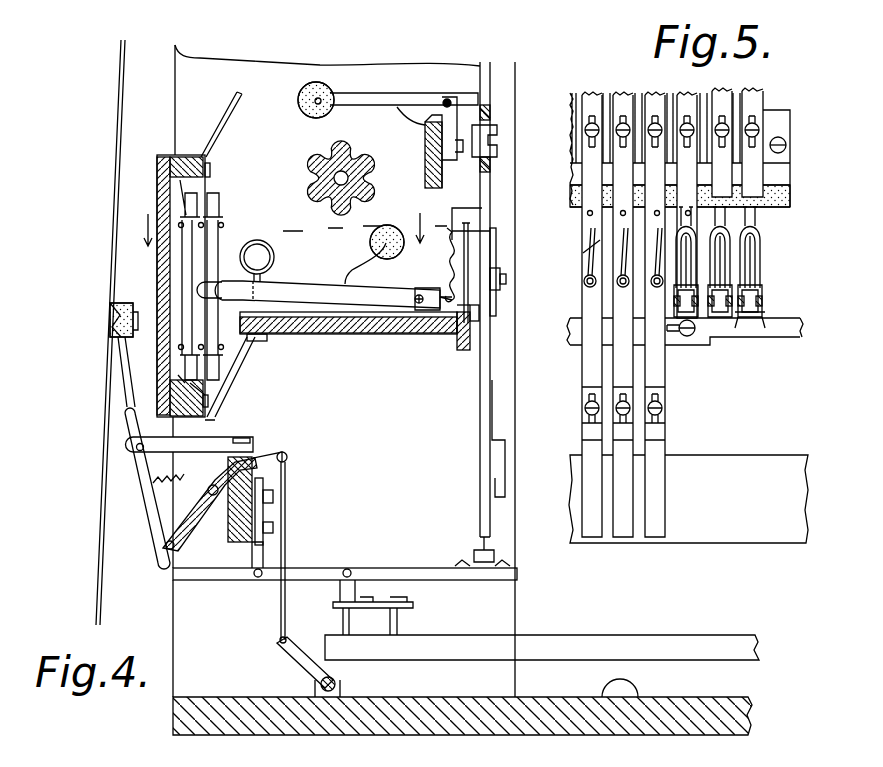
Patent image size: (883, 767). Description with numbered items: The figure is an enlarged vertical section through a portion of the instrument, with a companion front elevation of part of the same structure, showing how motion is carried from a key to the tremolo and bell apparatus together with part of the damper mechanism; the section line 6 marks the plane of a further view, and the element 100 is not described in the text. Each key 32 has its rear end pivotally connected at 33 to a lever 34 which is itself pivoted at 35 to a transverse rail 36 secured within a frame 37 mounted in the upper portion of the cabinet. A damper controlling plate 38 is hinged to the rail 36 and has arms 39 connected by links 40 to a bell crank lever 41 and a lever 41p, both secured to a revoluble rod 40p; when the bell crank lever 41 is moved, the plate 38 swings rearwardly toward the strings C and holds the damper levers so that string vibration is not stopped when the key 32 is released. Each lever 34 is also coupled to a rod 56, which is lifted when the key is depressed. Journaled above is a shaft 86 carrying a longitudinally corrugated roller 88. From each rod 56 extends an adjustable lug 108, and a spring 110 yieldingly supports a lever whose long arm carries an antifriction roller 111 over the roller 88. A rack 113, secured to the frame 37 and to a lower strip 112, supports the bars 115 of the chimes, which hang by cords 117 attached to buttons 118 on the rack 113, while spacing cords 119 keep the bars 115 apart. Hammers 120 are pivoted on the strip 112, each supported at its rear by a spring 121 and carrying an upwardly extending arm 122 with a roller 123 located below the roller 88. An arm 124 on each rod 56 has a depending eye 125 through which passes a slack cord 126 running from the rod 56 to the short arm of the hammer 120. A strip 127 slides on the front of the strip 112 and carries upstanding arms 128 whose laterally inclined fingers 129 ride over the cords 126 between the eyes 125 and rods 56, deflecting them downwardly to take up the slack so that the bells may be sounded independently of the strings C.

In FIG. 4, the strings C is at (110, 220).
In FIG. 4, the section line 6 is at (286, 229).
In FIG. 4, the key 32 is at (570, 635).
In FIG. 4, the pivotal connection 33 is at (347, 568).
In FIG. 4, the lever 34 is at (393, 568).
In FIG. 4, the pivotal connection 35 is at (257, 583).
In FIG. 4, the transverse rail 36 is at (238, 552).
In FIG. 5, the transverse rail 36 is at (688, 499).
In FIG. 4, the frame 37 is at (507, 363).
In FIG. 4, the damper controlling plate 38 is at (213, 497).
In FIG. 4, the arms 39 is at (270, 457).
In FIG. 4, the links 40 is at (288, 523).
In FIG. 4, the revoluble rod 40p is at (335, 683).
In FIG. 4, the bell crank lever 41 is at (143, 490).
In FIG. 4, the lever 41p is at (305, 665).
In FIG. 4, the rod 56 is at (488, 155).
In FIG. 5, the rod 56 is at (755, 103).
In FIG. 4, the shaft 86 is at (360, 173).
In FIG. 4, the longitudinally corrugated roller 88 is at (313, 157).
In FIG. 5, the longitudinally corrugated roller 88 is at (793, 158).
In FIG. 4, the arm 100 is at (376, 88).
In FIG. 4, the adjustable lug 108 is at (480, 123).
In FIG. 4, the spring 110 is at (420, 122).
In FIG. 4, the antifriction roller 111 is at (301, 92).
In FIG. 4, the lower strip 112 is at (397, 340).
In FIG. 5, the lower strip 112 is at (800, 337).
In FIG. 4, the rack 113 is at (157, 287).
In FIG. 4, the bars 115 is at (216, 245).
In FIG. 4, the cords 117 is at (207, 382).
In FIG. 4, the buttons 118 is at (212, 168).
In FIG. 4, the spacing cords 119 is at (243, 347).
In FIG. 4, the hammer 120 is at (373, 297).
In FIG. 5, the hammer 120 is at (757, 285).
In FIG. 4, the spring 121 is at (275, 263).
In FIG. 4, the arm 122 is at (357, 250).
In FIG. 5, the arm 122 is at (757, 272).
In FIG. 4, the roller 123 is at (385, 226).
In FIG. 5, the roller 123 is at (760, 242).
In FIG. 4, the arm 124 is at (467, 207).
In FIG. 5, the arm 124 is at (750, 203).
In FIG. 4, the depending eye 125 is at (447, 228).
In FIG. 5, the depending eye 125 is at (760, 230).
In FIG. 4, the cord 126 is at (452, 255).
In FIG. 5, the cord 126 is at (583, 253).
In FIG. 4, the strip 127 is at (462, 350).
In FIG. 5, the strip 127 is at (692, 343).
In FIG. 4, the upstanding arms 128 is at (467, 302).
In FIG. 5, the upstanding arms 128 is at (742, 317).
In FIG. 4, the inclined fingers 129 is at (447, 237).
In FIG. 5, the inclined fingers 129 is at (608, 233).